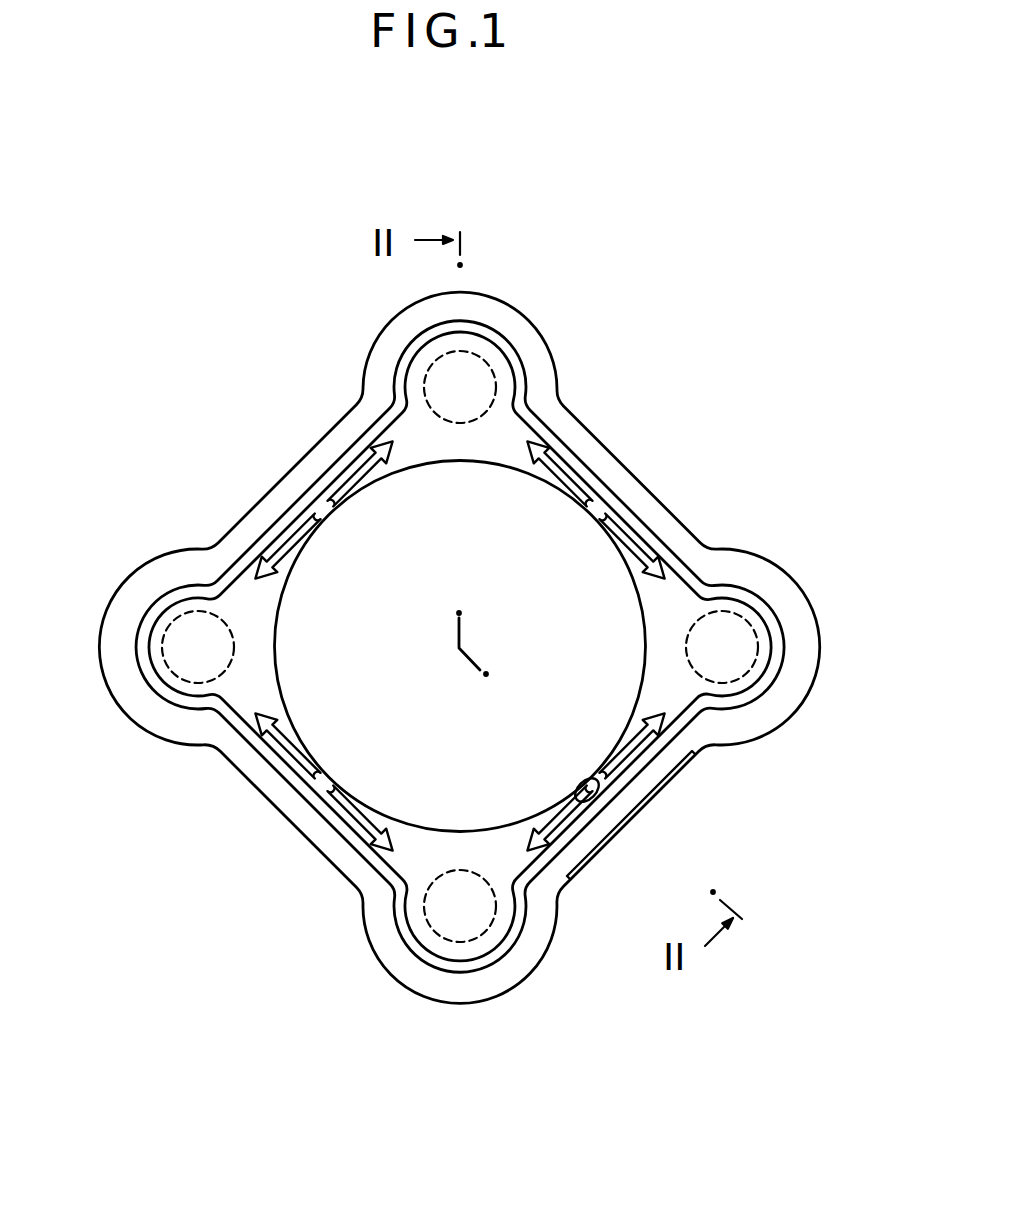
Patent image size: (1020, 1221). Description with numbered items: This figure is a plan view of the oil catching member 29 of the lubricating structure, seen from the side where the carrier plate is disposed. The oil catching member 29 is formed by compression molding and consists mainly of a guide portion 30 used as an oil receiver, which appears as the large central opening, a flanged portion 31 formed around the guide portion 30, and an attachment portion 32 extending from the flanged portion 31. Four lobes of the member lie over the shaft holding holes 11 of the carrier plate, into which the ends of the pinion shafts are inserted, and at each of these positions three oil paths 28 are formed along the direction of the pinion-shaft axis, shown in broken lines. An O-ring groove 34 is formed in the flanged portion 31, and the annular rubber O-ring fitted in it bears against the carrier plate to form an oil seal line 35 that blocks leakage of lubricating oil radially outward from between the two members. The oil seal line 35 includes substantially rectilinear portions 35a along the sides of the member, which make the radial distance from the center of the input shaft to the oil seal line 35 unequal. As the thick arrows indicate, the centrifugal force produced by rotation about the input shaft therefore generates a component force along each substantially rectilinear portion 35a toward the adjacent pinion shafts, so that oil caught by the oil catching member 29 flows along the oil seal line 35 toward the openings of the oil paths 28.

The shaft holding hole 11 is at (459, 647).
The oil path 28 is at (460, 644).
The oil catching member 29 is at (632, 470).
The guide portion 30 is at (645, 600).
The flanged portion 31 is at (700, 732).
The attachment portion 32 is at (653, 788).
The O-ring groove 34 is at (603, 797).
The oil seal line 35 is at (330, 818).
The substantially rectilinear portion 35a is at (307, 502).